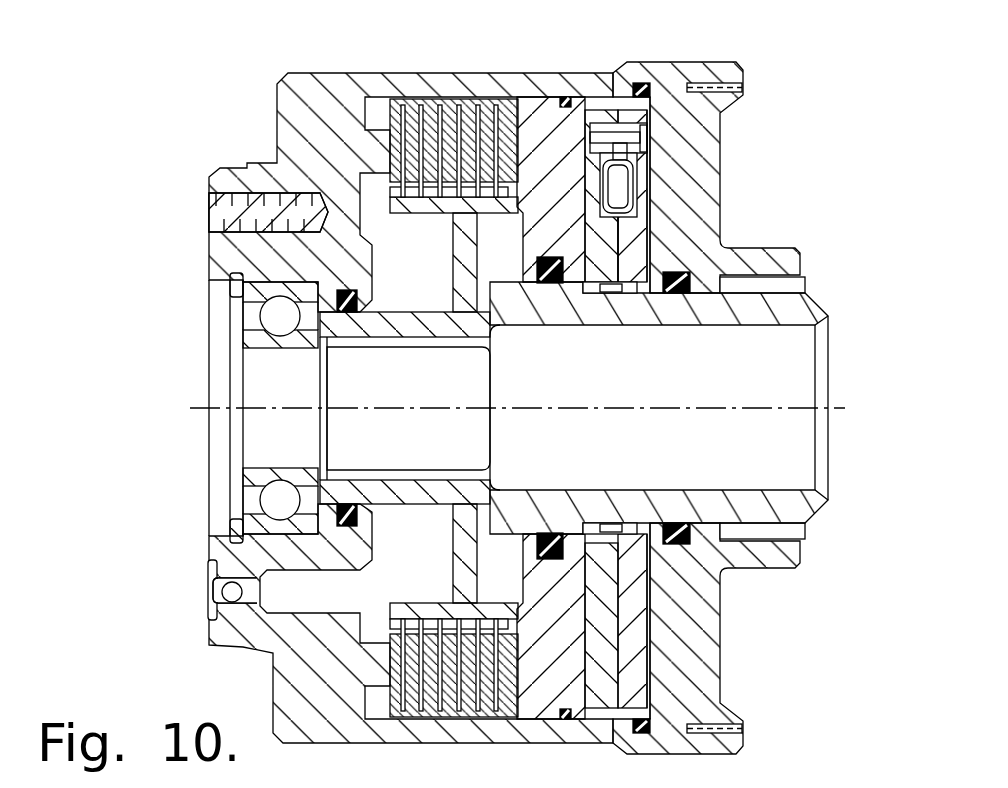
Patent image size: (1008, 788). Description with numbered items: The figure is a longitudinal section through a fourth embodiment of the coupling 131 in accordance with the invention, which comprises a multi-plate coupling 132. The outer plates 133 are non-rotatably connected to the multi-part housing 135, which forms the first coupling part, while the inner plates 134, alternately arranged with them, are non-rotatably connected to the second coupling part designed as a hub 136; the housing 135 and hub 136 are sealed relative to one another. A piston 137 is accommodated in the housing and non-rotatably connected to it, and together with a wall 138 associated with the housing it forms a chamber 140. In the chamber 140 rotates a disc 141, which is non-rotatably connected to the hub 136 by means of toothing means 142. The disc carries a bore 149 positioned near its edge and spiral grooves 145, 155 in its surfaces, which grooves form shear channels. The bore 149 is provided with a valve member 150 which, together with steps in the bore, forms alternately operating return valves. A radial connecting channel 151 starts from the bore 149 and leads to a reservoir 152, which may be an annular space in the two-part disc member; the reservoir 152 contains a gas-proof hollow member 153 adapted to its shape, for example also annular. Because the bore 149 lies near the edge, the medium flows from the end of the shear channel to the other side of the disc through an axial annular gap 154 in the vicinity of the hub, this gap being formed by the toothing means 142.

The clutch assembly 131 is at (782, 128).
The multi-plate coupling 132 is at (354, 104).
The outer plates 133 is at (413, 125).
The inner plates 134 is at (442, 125).
The multi-part housing 135 is at (722, 75).
The hub 136 is at (803, 307).
The piston 137 is at (548, 123).
The wall 138 is at (707, 213).
The chamber 140 is at (627, 110).
The disc 141 is at (600, 123).
The toothing means 142 is at (613, 293).
The spiral groove 145 is at (603, 190).
The bore 149 is at (633, 138).
The valve member 150 is at (645, 143).
The radial connecting channel 151 is at (613, 153).
The reservoir 152 is at (630, 213).
The gas-proof hollow member 153 is at (607, 208).
The axial annular gap 154 is at (637, 287).
The spiral groove 155 is at (652, 197).